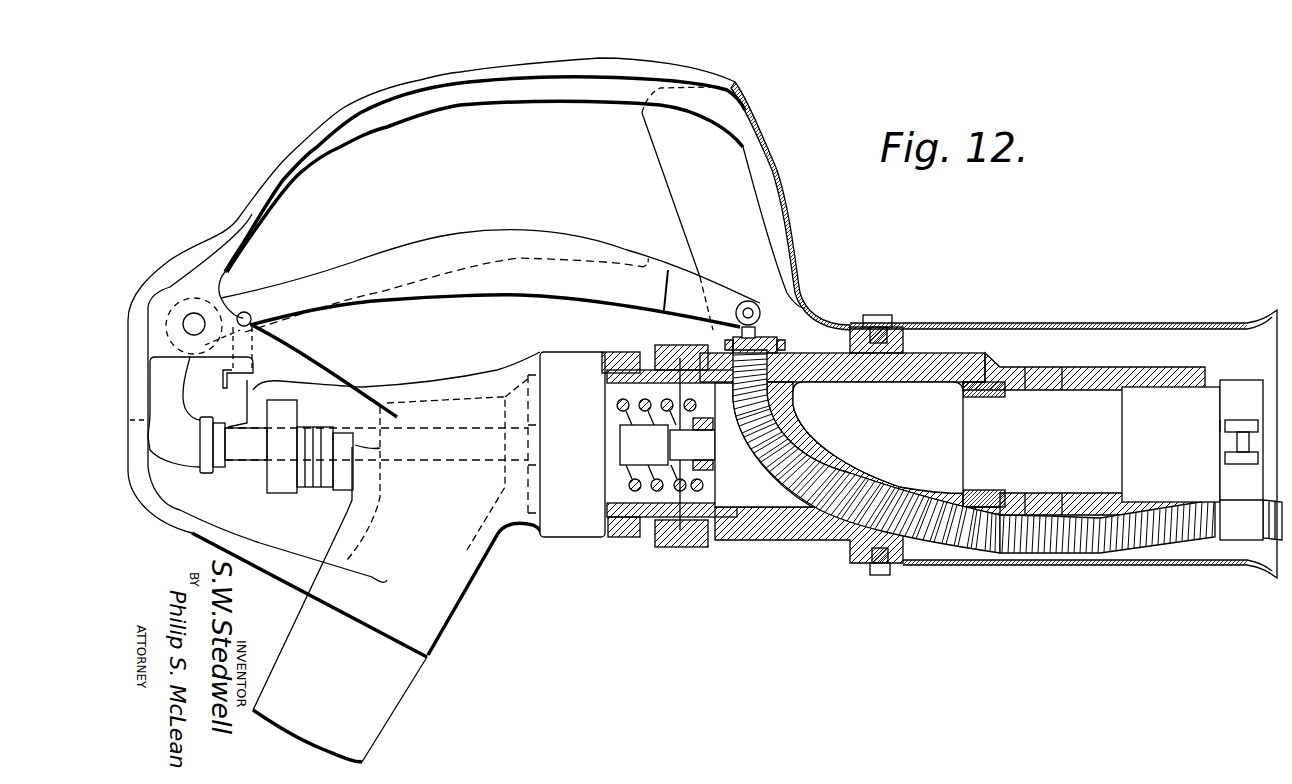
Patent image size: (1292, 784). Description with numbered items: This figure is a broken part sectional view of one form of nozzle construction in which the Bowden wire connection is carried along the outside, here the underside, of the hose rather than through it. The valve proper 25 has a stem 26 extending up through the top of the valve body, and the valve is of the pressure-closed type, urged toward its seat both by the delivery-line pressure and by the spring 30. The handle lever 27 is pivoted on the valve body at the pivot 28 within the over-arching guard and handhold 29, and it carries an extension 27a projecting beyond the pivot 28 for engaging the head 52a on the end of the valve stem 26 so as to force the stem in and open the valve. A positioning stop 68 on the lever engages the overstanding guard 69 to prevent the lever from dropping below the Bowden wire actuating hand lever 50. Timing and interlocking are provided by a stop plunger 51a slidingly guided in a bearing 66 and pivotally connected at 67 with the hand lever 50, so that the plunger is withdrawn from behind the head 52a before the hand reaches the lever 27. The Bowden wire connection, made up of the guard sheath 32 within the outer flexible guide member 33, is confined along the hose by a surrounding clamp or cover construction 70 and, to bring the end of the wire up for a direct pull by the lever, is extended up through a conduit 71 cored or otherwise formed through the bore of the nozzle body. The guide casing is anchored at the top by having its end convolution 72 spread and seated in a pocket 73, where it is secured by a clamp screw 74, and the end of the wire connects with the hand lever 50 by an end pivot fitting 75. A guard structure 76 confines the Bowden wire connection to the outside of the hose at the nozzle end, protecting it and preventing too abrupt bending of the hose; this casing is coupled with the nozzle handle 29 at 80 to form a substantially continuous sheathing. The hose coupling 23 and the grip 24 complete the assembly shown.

The hose coupling block 23 is at (1171, 444).
The handle grip 24 is at (367, 604).
The valve proper 25 is at (572, 444).
The stem 26 is at (261, 446).
The handle lever 27 is at (482, 266).
The extension 27a is at (197, 444).
The pivot 28 is at (193, 313).
The guard and handhold 29 is at (526, 68).
The spring 30 is at (618, 407).
The guard sheath 32 is at (703, 327).
The outer flexible guide member 33 is at (1040, 556).
The Bowden wire actuating hand lever 50 is at (600, 296).
The stop plunger 51a is at (238, 398).
The head 52a is at (230, 470).
The bearing 66 is at (240, 380).
The pivotal connection 67 is at (253, 315).
The positioning stop 68 is at (155, 448).
The overstanding guard 69 is at (165, 513).
The clamp or cover construction 70 is at (1240, 535).
The conduit 71 is at (805, 485).
The end convolution 72 is at (768, 340).
The pocket 73 is at (786, 345).
The clamp screw 74 is at (800, 320).
The end pivot fitting 75 is at (751, 300).
The guard structure 76 is at (1062, 314).
The coupling 80 is at (733, 94).